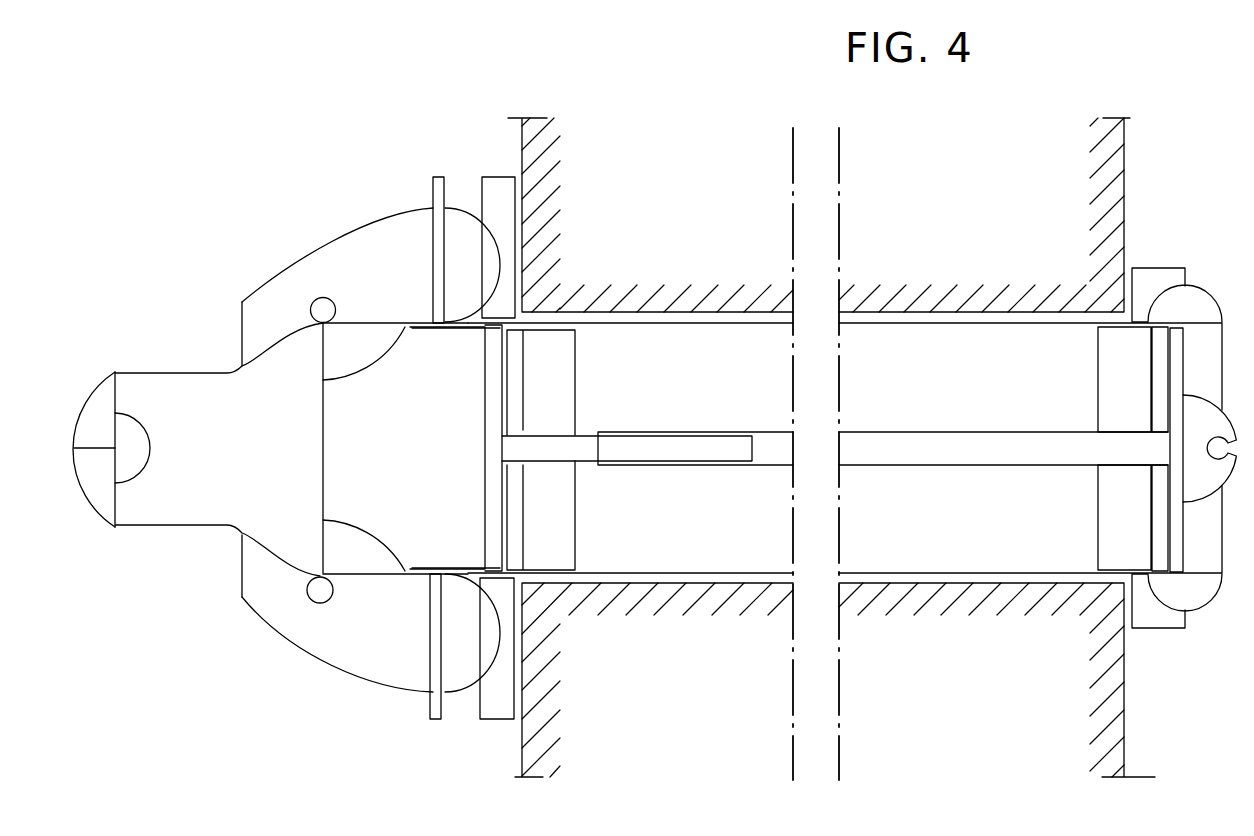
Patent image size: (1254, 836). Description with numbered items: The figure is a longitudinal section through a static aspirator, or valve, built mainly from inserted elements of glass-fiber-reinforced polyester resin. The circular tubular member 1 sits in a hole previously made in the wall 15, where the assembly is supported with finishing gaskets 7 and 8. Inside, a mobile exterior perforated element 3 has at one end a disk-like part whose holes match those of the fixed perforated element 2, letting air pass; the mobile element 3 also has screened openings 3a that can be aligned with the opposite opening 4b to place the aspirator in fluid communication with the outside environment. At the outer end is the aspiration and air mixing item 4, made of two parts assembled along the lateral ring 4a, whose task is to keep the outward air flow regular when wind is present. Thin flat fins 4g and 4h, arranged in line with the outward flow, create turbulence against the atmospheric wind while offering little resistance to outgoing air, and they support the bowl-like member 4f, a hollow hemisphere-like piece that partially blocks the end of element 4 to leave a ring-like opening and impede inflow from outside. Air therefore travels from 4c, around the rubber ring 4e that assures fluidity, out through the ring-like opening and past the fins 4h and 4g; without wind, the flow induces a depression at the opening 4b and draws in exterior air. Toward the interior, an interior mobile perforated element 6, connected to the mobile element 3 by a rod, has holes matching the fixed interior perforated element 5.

The tubular member 1 is at (845, 448).
The fixed perforated element 2 is at (835, 450).
The mobile exterior perforated element 3 is at (412, 448).
The screened openings 3a is at (364, 449).
The aspiration and air mixing item 4 is at (307, 450).
The lateral ring 4a is at (412, 454).
The opening 4b is at (411, 451).
The air inlet passage 4c is at (222, 449).
The rubber ring 4e is at (303, 448).
The bowl-like member 4f is at (138, 473).
The thin flat fin 4g is at (86, 410).
The thin flat fin 4h is at (93, 451).
The fixed interior perforated element 5 is at (1133, 449).
The interior mobile perforated element 6 is at (1203, 450).
The finishing gasket 7 is at (497, 448).
The finishing gasket 8 is at (1177, 450).
The wall 15 is at (1124, 710).